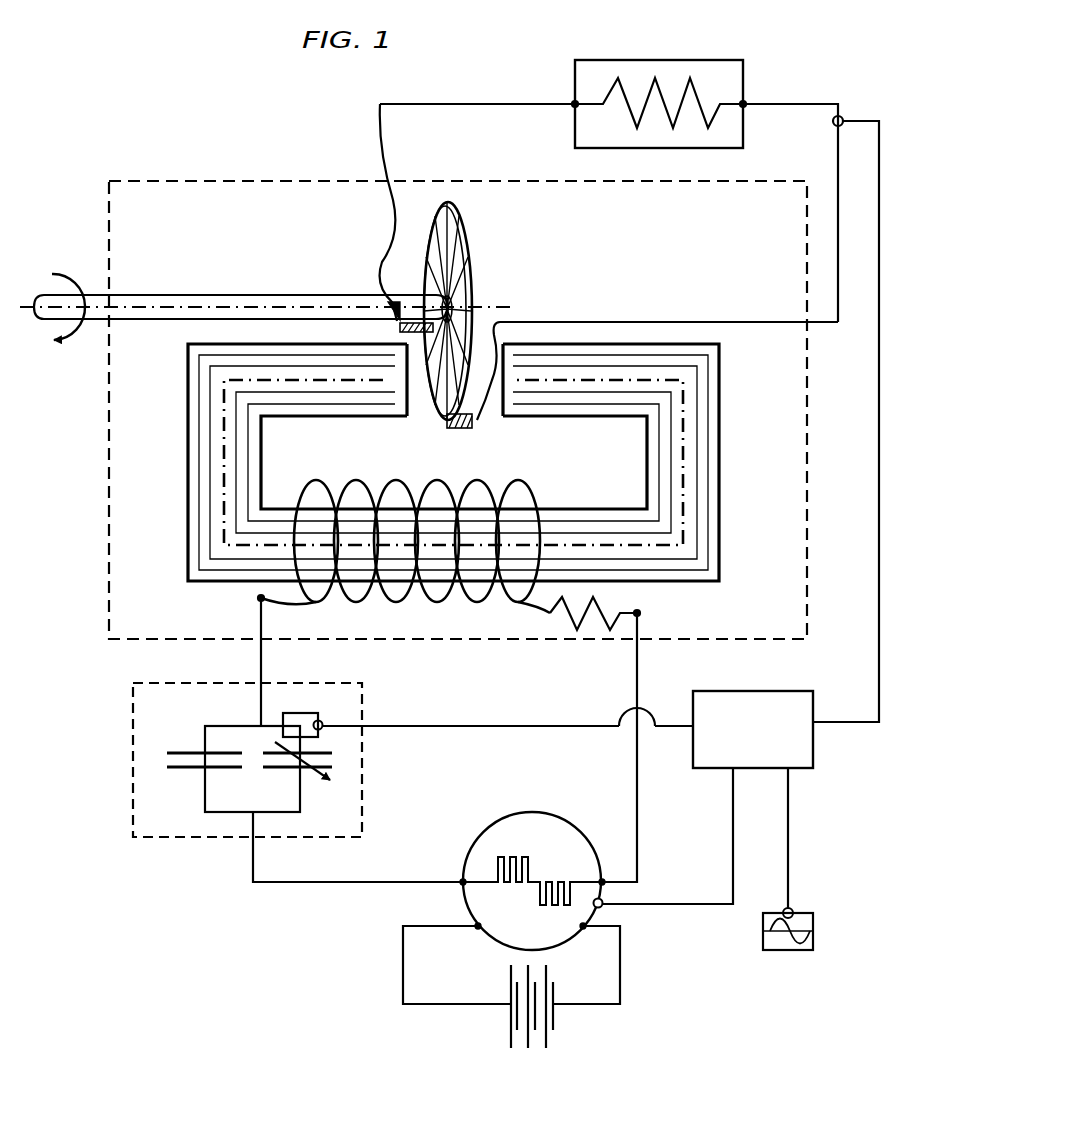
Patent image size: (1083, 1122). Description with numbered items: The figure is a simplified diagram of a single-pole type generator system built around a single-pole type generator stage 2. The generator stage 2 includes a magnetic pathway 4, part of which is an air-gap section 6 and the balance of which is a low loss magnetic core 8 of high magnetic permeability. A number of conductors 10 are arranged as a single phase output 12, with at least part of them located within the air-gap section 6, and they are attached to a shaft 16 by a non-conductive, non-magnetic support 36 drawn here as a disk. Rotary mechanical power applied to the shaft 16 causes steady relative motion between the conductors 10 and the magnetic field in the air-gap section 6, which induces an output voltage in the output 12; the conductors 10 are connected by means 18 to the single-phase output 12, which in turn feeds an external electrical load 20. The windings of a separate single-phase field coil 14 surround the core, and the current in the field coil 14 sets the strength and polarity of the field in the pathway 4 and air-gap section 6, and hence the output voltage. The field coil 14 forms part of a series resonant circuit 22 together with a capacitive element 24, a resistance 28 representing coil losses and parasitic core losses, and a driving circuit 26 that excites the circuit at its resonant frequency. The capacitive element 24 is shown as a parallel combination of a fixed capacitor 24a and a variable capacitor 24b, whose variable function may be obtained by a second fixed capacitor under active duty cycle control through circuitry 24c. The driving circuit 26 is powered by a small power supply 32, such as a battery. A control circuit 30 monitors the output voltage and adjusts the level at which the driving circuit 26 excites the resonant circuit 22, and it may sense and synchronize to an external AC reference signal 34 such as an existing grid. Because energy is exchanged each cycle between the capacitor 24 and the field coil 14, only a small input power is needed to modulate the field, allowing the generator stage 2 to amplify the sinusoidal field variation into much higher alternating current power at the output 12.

The single-pole type generator stage 2 is at (232, 180).
The magnetic pathway 4 is at (224, 424).
The air-gap section 6 is at (424, 423).
The low loss magnetic core 8 is at (188, 498).
The conductors 10 is at (462, 282).
The single phase output 12 is at (740, 318).
The single-phase field coil 14 is at (530, 483).
The shaft 16 is at (133, 296).
The connection means 18 is at (393, 321).
The external electrical load 20 is at (660, 60).
The series resonant circuit 22 is at (325, 883).
The capacitive element 24 is at (133, 703).
The fixed capacitor 24a is at (200, 772).
The variable capacitor 24b is at (334, 776).
The duty cycle control circuitry 24c is at (318, 712).
The driving circuit 26 is at (533, 811).
The resistance 28 is at (567, 616).
The control circuit 30 is at (816, 748).
The power supply 32 is at (508, 1016).
The external AC reference signal 34 is at (815, 925).
The support 36 is at (472, 222).